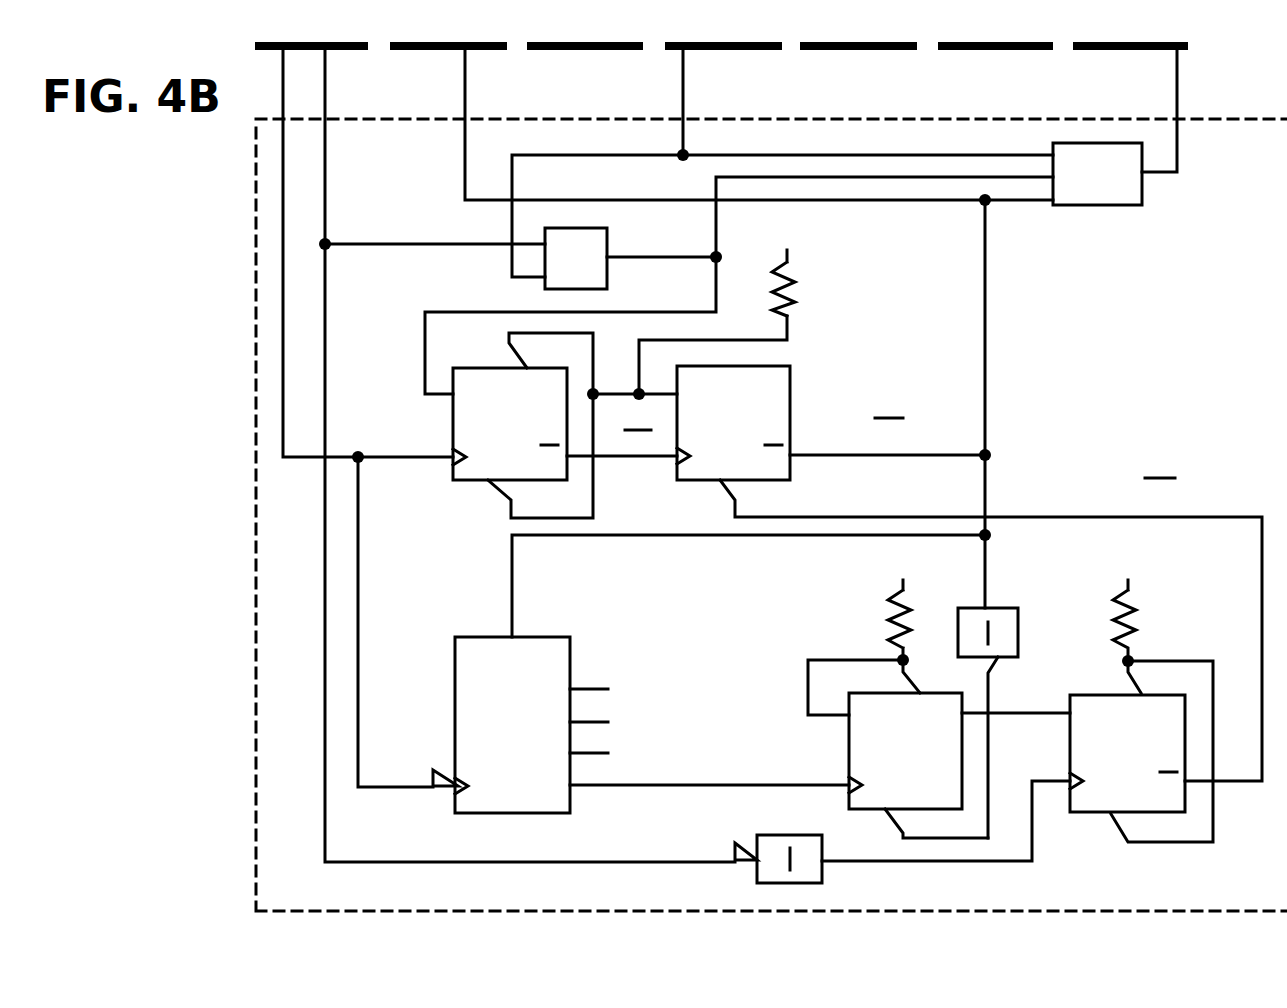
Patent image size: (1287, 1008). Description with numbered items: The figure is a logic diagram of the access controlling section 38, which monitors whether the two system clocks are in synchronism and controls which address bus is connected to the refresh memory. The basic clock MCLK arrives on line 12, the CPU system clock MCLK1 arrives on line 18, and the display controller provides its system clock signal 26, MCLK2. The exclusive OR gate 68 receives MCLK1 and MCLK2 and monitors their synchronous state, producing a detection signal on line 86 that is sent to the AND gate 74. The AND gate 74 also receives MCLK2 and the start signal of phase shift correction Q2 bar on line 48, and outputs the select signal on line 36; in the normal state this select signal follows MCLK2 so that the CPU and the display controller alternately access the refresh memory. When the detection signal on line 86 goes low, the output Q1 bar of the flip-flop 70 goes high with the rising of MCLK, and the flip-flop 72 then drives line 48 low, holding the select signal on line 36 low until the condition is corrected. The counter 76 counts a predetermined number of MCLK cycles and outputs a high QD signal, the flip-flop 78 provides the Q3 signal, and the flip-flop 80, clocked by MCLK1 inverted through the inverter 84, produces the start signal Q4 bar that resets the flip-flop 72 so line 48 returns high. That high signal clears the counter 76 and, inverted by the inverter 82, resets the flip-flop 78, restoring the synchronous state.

The line 12 is at (283, 352).
The line 18 is at (325, 98).
The system clock signal 26 is at (685, 100).
The line 36 is at (1178, 85).
The access controlling section 38 is at (1226, 386).
The line 48 is at (467, 98).
The exclusive OR gate 68 is at (613, 240).
The flip-flop 70 is at (470, 483).
The flip-flop 72 is at (791, 381).
The AND gate 74 is at (1093, 207).
The counter 76 is at (555, 635).
The flip-flop 78 is at (849, 760).
The flip-flop 80 is at (1105, 694).
The inverter 82 is at (1005, 606).
The inverter 84 is at (790, 835).
The line 86 is at (842, 178).